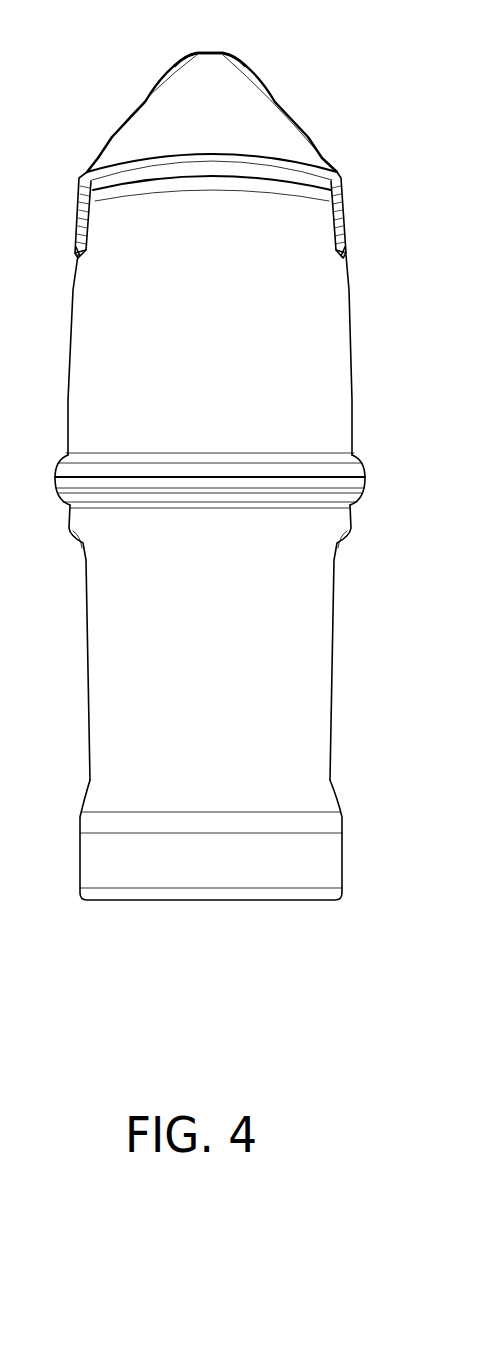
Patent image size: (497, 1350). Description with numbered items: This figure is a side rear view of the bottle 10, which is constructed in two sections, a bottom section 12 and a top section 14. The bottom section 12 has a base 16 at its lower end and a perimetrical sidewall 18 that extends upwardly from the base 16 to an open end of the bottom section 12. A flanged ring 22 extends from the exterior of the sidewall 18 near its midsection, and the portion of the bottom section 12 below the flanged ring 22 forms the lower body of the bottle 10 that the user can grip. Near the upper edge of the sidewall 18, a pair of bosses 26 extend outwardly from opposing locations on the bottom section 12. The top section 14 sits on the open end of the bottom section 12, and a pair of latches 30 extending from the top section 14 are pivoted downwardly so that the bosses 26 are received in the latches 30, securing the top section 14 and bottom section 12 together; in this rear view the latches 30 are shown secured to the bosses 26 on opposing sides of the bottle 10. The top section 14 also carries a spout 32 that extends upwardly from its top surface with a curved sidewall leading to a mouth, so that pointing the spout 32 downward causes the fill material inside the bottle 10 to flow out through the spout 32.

The bottle 10 is at (365, 80).
The bottom section 12 is at (352, 377).
The top section 14 is at (116, 135).
The base 16 is at (297, 902).
The perimetrical sidewall 18 is at (273, 665).
The flanged ring 22 is at (366, 482).
The bosses 26 is at (77, 218).
The latches 30 is at (76, 251).
The spout 32 is at (273, 78).